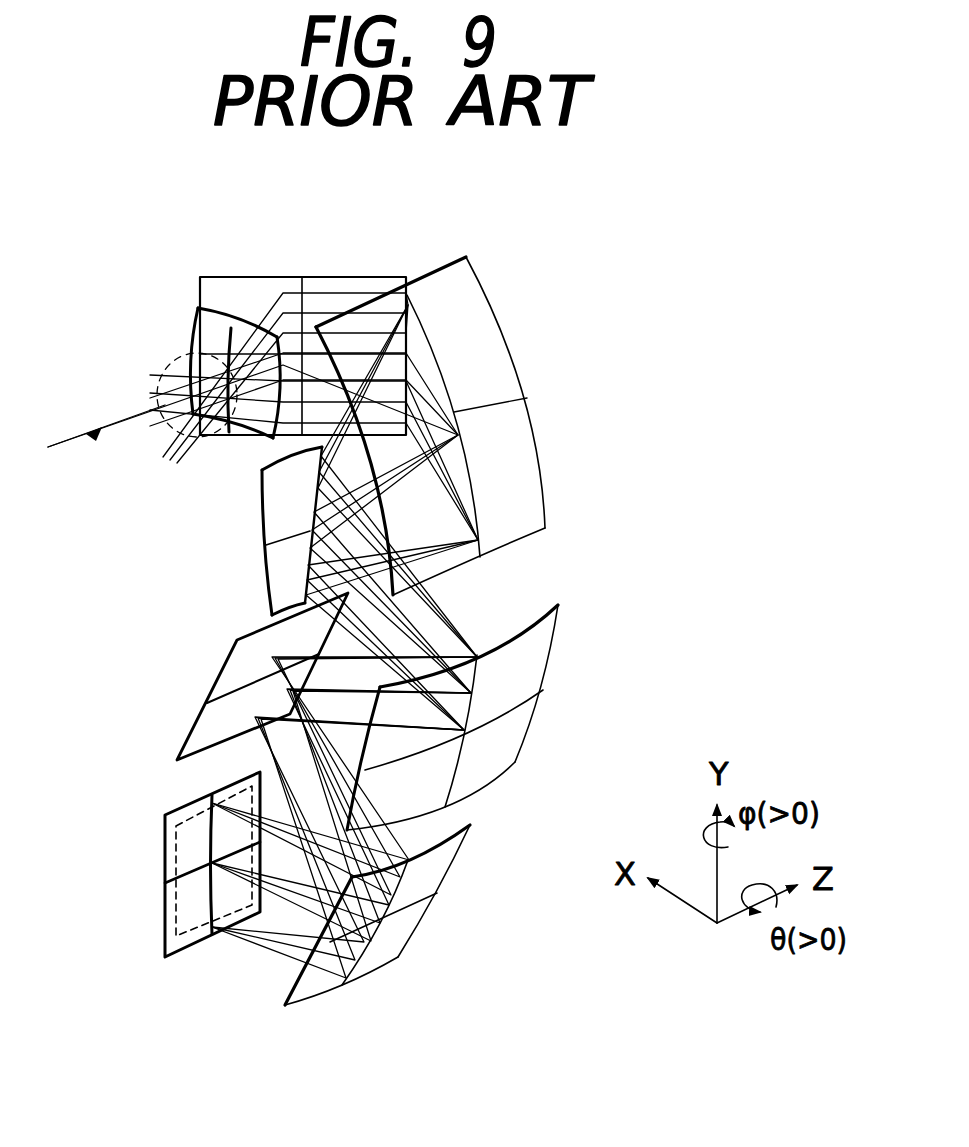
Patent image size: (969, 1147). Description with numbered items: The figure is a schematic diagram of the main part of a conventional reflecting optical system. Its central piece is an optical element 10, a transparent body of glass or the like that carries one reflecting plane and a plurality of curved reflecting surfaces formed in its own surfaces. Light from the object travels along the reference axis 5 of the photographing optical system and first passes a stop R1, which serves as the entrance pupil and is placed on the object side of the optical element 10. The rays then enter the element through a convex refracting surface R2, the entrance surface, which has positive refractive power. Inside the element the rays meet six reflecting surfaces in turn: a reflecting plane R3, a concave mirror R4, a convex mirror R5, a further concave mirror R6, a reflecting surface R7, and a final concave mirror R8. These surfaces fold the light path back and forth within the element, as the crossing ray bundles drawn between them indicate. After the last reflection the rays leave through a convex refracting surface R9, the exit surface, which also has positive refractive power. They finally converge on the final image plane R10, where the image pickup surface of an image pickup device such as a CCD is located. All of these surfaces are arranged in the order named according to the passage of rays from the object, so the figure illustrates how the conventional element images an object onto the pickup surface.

The optical element 10 is at (546, 249).
The reference axis 5 is at (117, 421).
The stop (entrance pupil) R1 is at (160, 372).
The convex refracting surface (entrance surface) R2 is at (187, 325).
The reflecting plane R3 is at (357, 276).
The concave mirror R4 is at (517, 359).
The convex mirror R5 is at (263, 507).
The concave mirror R6 is at (522, 748).
The reflecting surface R7 is at (215, 673).
The concave mirror R8 is at (417, 923).
The convex refracting surface (exit surface) R9 is at (166, 920).
The final image plane R10 is at (175, 851).